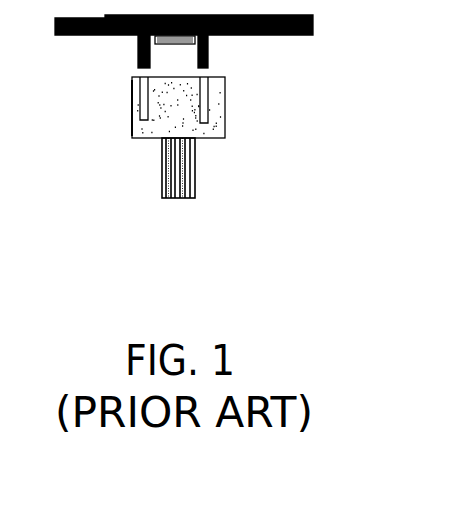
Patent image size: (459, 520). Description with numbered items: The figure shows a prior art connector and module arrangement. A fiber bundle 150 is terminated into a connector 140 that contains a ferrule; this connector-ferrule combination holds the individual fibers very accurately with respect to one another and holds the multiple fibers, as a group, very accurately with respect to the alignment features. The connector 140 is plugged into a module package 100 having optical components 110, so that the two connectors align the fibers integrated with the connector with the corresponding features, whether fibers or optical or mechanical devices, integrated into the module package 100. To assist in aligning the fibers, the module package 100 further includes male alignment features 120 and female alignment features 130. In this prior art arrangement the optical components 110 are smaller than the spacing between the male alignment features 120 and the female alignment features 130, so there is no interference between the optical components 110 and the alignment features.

The module package 100 is at (320, 34).
The optical components 110 is at (181, 47).
The male alignment features 120 is at (125, 121).
The female alignment features 130 is at (134, 72).
The connector 140 is at (235, 123).
The fiber bundle 150 is at (206, 169).